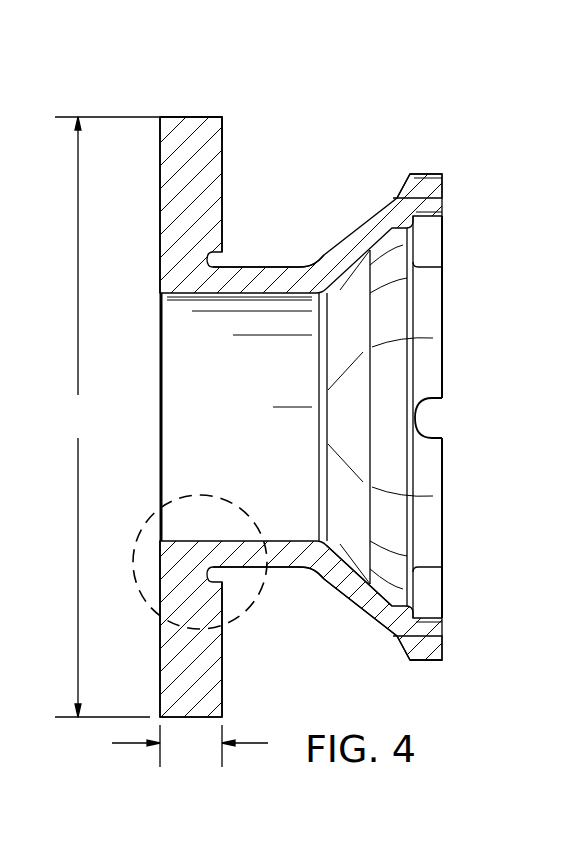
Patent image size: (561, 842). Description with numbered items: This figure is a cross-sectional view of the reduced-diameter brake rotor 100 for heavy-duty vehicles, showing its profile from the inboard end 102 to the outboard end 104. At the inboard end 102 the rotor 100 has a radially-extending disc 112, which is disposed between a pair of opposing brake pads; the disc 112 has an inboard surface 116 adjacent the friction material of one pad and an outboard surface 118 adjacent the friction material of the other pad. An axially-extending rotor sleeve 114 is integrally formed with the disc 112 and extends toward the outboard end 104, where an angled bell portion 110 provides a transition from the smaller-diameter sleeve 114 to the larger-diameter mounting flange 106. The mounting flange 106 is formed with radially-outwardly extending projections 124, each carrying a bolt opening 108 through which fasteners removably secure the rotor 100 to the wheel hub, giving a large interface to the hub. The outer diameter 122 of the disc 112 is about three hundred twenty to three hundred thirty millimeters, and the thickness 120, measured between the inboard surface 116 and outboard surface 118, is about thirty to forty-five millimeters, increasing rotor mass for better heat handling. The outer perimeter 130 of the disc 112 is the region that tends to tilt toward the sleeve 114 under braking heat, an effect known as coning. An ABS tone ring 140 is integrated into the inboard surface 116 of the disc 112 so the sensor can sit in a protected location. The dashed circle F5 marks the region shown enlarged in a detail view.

The reduced-diameter brake rotor 100 is at (400, 52).
The inboard end 102 is at (159, 117).
The outboard end 104 is at (441, 174).
The mounting flange 106 is at (420, 663).
The openings 108 is at (443, 652).
The angled bell portion 110 is at (330, 586).
The disc 112 is at (185, 122).
The rotor sleeve 114 is at (282, 268).
The inboard surface 116 is at (160, 167).
The outboard surface 118 is at (222, 191).
The thickness 120 is at (190, 746).
The outer diameter 122 is at (107, 417).
The projections 124 is at (425, 174).
The outer perimeter 130 is at (213, 117).
The ABS tone ring 140 is at (162, 278).
The detail view reference circle F5 is at (140, 593).